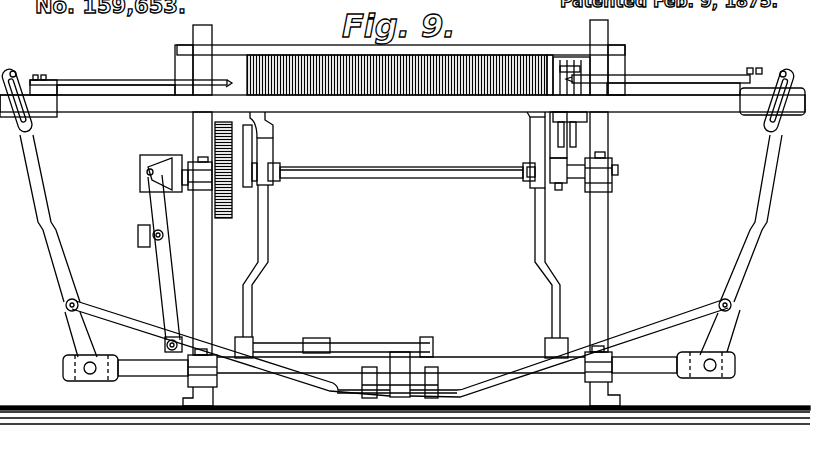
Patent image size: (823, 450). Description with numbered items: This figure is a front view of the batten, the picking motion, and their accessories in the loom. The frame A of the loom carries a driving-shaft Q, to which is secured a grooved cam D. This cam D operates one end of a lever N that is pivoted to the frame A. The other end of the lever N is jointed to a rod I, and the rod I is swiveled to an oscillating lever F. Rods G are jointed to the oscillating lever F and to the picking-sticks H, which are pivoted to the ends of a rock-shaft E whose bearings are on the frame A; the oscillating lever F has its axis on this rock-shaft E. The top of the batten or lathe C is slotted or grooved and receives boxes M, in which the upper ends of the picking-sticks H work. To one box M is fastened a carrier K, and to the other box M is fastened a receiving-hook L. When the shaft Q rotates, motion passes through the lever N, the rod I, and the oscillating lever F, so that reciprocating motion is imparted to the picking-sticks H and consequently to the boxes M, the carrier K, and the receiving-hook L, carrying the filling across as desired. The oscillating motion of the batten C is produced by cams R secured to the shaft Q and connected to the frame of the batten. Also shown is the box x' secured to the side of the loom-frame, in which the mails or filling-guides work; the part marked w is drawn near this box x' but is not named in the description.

The frame of the loom A is at (401, 213).
The batten C is at (402, 110).
The grooved cam D is at (162, 160).
The rock-shaft E is at (399, 361).
The oscillating lever F is at (386, 396).
The rods G is at (184, 352).
The picking-sticks H is at (401, 246).
The rod I is at (343, 337).
The carrier K is at (703, 75).
The receiving-hook L is at (116, 79).
The boxes M is at (22, 90).
The lever N is at (155, 292).
The driving-shaft Q is at (401, 164).
The cams R is at (403, 165).
The springs w is at (596, 125).
The box x' is at (559, 60).